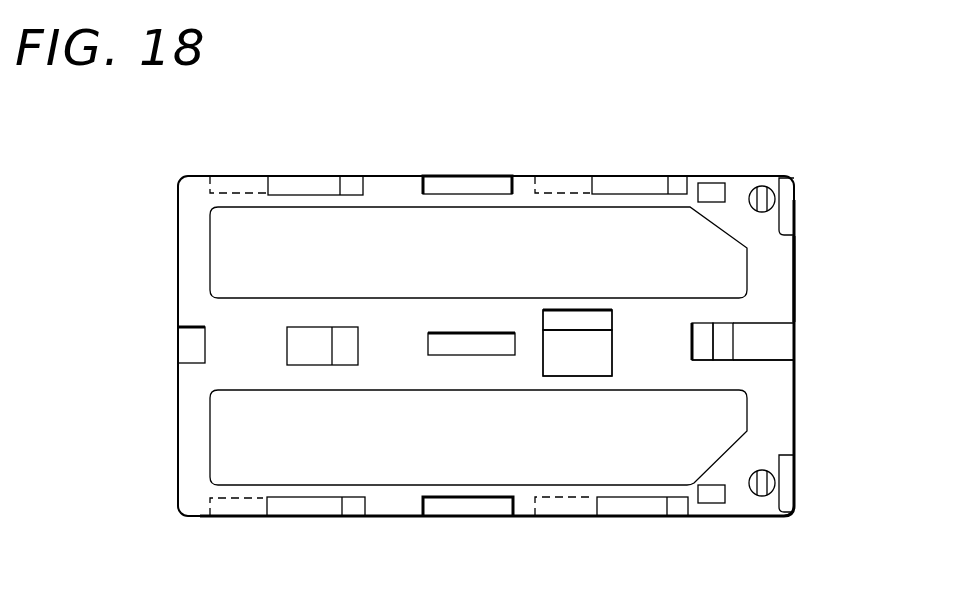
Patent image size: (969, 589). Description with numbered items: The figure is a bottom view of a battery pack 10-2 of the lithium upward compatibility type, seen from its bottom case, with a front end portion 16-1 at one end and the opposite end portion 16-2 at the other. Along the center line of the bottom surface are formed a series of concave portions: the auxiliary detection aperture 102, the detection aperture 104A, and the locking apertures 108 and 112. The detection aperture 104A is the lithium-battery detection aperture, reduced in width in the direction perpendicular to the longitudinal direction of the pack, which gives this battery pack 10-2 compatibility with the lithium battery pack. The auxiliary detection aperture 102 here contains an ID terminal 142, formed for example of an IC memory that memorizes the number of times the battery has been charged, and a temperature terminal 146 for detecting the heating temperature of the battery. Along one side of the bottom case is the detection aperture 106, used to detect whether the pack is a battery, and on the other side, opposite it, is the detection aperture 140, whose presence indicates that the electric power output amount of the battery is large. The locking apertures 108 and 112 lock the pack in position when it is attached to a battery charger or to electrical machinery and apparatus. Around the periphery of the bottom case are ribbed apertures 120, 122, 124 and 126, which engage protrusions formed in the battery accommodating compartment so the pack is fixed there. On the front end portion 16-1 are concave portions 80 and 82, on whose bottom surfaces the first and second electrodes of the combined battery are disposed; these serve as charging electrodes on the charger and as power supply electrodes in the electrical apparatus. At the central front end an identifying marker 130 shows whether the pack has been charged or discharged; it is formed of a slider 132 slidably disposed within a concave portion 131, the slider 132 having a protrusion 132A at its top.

The battery pack 10-2 is at (219, 172).
The front end portion 16-1 is at (795, 242).
The side surface 16-2 is at (178, 243).
The concave portion 80 is at (780, 178).
The concave portion 82 is at (778, 500).
The auxiliary detection aperture 102 is at (577, 310).
The detection aperture 104A is at (461, 333).
The detection aperture 106 is at (468, 510).
The locking aperture 108 is at (300, 365).
The locking aperture 112 is at (192, 357).
The aperture 120 is at (298, 508).
The aperture 122 is at (639, 508).
The aperture 124 is at (305, 182).
The aperture 126 is at (644, 183).
The identifying marker 130 is at (722, 364).
The concave portion 131 is at (765, 336).
The slider 132 is at (702, 343).
The protrusion 132A is at (722, 328).
The detection aperture 140 is at (499, 186).
The ID terminal 142 is at (598, 315).
The temperature terminal 146 is at (570, 372).